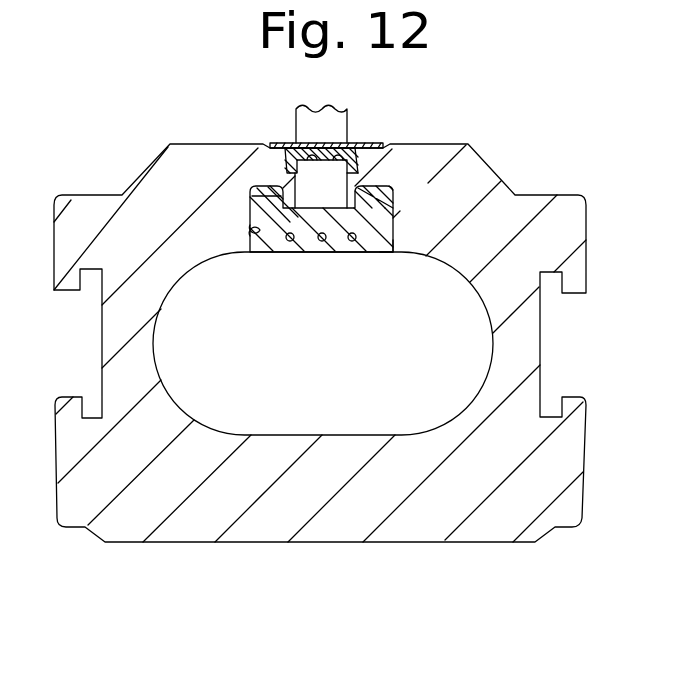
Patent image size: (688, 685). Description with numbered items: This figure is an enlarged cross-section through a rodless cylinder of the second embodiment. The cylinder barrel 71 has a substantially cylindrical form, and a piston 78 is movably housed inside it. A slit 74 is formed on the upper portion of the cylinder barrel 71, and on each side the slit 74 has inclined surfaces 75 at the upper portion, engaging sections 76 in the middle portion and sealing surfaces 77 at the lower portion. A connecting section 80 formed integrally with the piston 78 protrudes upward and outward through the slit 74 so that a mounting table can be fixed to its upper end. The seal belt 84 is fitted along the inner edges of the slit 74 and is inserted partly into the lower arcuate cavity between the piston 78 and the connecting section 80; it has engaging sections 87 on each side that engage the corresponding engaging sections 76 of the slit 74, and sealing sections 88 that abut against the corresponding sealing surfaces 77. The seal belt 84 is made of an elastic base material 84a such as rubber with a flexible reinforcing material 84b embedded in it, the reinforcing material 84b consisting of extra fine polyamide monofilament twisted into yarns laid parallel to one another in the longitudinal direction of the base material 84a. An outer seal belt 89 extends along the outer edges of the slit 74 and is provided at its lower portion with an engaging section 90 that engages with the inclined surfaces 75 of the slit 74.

The cylinder barrel 71 is at (330, 531).
The slit 74 is at (250, 225).
The inclined surfaces 75 is at (360, 167).
The engaging sections 76 is at (389, 212).
The sealing surfaces 77 is at (393, 253).
The piston 78 is at (162, 349).
The connecting section 80 is at (302, 122).
The seal belt 84 is at (273, 252).
The base material 84a is at (378, 252).
The reinforcing material 84b is at (352, 241).
The engaging sections 87 is at (253, 198).
The sealing sections 88 is at (252, 252).
The outer seal belt 89 is at (363, 143).
The engaging section 90 is at (320, 161).